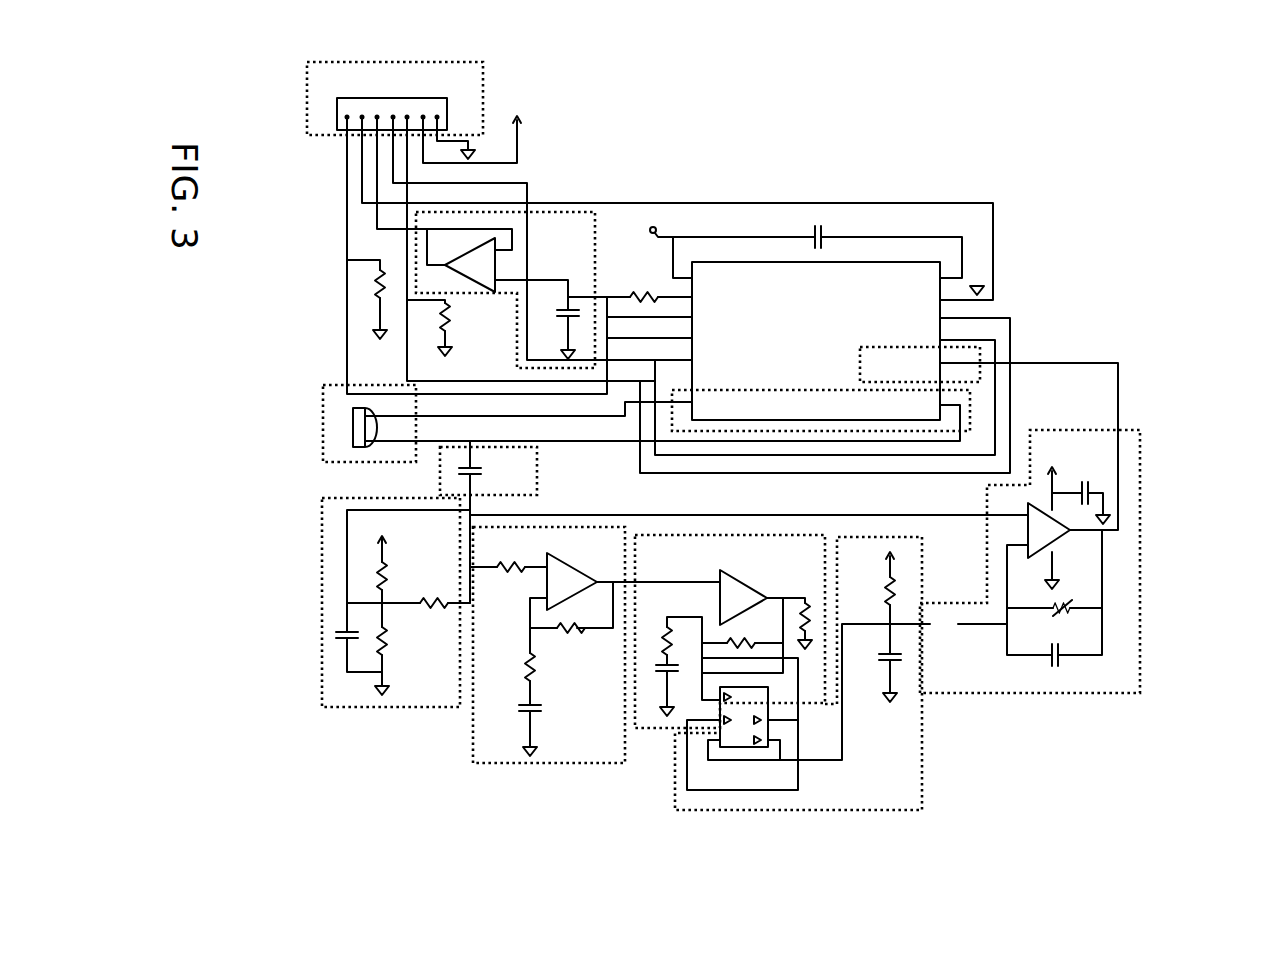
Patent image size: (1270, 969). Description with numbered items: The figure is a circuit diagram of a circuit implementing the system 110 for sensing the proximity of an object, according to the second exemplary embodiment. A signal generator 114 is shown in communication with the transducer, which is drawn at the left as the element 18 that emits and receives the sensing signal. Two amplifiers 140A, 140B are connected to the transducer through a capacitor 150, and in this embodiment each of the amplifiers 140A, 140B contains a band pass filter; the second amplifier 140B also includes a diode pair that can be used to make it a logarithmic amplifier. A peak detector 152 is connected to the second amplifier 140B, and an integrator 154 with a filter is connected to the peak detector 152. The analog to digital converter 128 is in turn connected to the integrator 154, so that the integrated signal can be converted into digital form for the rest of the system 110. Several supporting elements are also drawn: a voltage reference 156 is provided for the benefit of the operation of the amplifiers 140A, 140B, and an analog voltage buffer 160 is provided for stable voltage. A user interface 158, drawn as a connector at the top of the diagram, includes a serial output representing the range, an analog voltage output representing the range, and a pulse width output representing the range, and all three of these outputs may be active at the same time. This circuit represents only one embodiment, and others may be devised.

The system for sensing proximity 110 is at (1073, 128).
The speaker 18 is at (320, 432).
The signal generator 114 is at (970, 402).
The analog to digital converter 128 is at (980, 360).
The user interface 158 is at (463, 62).
The analog voltage buffer 160 is at (578, 213).
The capacitor 150 is at (538, 473).
The voltage reference 156 is at (347, 710).
The first amplifier 140A is at (517, 773).
The second amplifier 140B is at (648, 733).
The peak detector 152 is at (897, 813).
The integrator 154 is at (1147, 548).